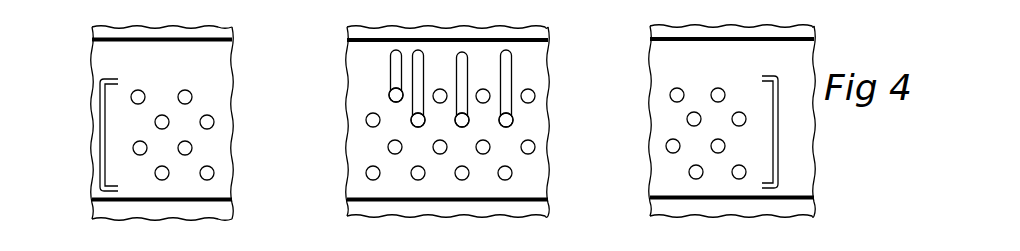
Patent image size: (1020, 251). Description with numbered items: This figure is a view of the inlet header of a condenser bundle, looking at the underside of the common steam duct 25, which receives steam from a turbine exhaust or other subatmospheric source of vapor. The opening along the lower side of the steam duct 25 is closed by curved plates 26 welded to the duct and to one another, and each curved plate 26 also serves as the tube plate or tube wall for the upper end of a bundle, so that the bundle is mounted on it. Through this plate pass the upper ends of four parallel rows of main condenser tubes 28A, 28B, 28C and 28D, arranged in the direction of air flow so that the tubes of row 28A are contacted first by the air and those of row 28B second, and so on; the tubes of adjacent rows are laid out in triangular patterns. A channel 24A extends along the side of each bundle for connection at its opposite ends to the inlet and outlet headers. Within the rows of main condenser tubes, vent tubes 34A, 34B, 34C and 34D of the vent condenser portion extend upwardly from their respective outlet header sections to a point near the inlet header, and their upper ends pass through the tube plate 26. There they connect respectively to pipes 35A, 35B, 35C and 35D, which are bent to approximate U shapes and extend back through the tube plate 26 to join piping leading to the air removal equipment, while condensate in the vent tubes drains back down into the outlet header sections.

The channel 24A is at (114, 135).
The steam duct 25 is at (531, 207).
The curved plate 26 is at (662, 170).
The first row of tubes 28A is at (207, 173).
The second row of tubes 28B is at (185, 148).
The third row of tubes 28C is at (207, 122).
The fourth row of tubes 28D is at (133, 92).
The vent tube 34A is at (466, 123).
The vent tube 34B is at (414, 122).
The vent tube 34C is at (508, 119).
The vent tube 34D is at (394, 97).
The pipe 35A is at (464, 68).
The pipe 35B is at (417, 58).
The pipe 35C is at (507, 77).
The pipe 35D is at (397, 76).